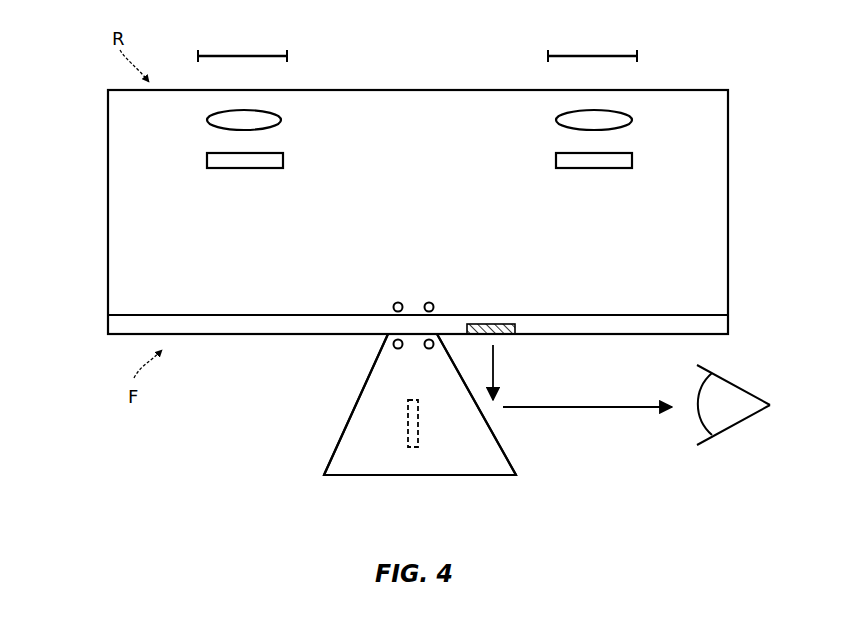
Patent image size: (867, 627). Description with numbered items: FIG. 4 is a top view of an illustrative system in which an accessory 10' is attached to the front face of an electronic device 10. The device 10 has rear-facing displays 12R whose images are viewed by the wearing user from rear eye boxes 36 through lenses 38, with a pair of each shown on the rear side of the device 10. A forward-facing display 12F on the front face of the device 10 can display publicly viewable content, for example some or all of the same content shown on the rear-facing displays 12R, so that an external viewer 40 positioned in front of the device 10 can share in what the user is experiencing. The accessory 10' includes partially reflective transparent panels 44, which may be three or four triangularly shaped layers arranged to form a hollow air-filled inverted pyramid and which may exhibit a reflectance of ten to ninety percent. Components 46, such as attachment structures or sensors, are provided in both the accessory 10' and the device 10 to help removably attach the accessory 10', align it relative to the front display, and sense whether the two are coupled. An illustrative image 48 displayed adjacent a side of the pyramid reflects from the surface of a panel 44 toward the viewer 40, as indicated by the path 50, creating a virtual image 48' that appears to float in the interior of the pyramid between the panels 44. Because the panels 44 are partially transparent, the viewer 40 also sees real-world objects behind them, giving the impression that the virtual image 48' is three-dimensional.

The electronic device 10 is at (457, 212).
The accessory 10' is at (387, 420).
The forward-facing display 12F is at (108, 325).
The rear-facing displays 12R is at (283, 160).
The rear eye boxes 36 is at (287, 56).
The lenses 38 is at (281, 120).
The external viewer 40 is at (740, 420).
The panels 44 is at (358, 397).
The components 46 is at (429, 302).
The image 48 is at (491, 297).
The virtual image 48' is at (443, 423).
The light path 50 is at (541, 407).